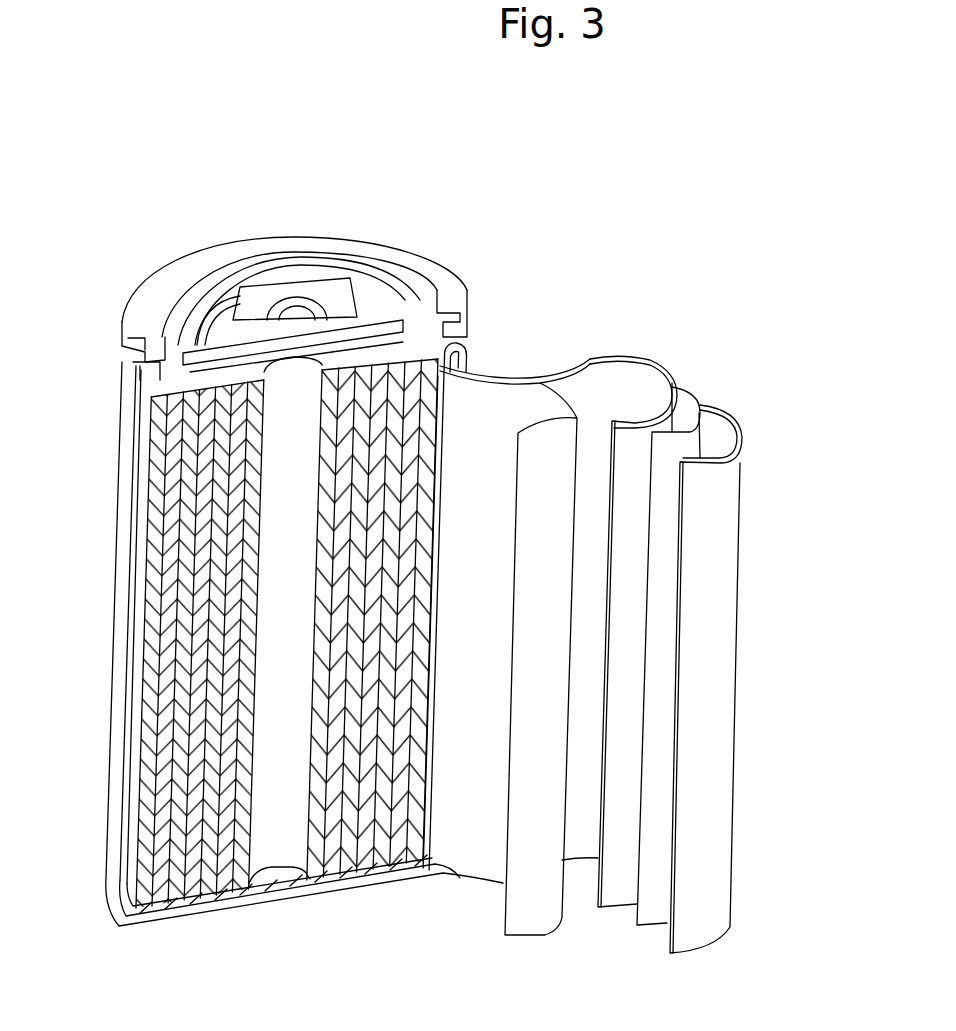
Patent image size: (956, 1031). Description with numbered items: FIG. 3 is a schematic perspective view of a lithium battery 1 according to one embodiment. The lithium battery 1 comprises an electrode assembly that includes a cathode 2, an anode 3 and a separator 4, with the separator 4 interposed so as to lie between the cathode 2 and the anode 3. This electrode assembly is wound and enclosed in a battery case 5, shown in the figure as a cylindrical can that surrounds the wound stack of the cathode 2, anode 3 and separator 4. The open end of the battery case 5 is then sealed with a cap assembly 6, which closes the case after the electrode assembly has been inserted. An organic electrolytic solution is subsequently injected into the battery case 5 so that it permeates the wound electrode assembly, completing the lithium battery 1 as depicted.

The lithium battery 1 is at (712, 340).
The cathode 2 is at (725, 537).
The anode 3 is at (628, 427).
The separator 4 is at (697, 433).
The battery case 5 is at (108, 845).
The cap assembly 6 is at (312, 273).